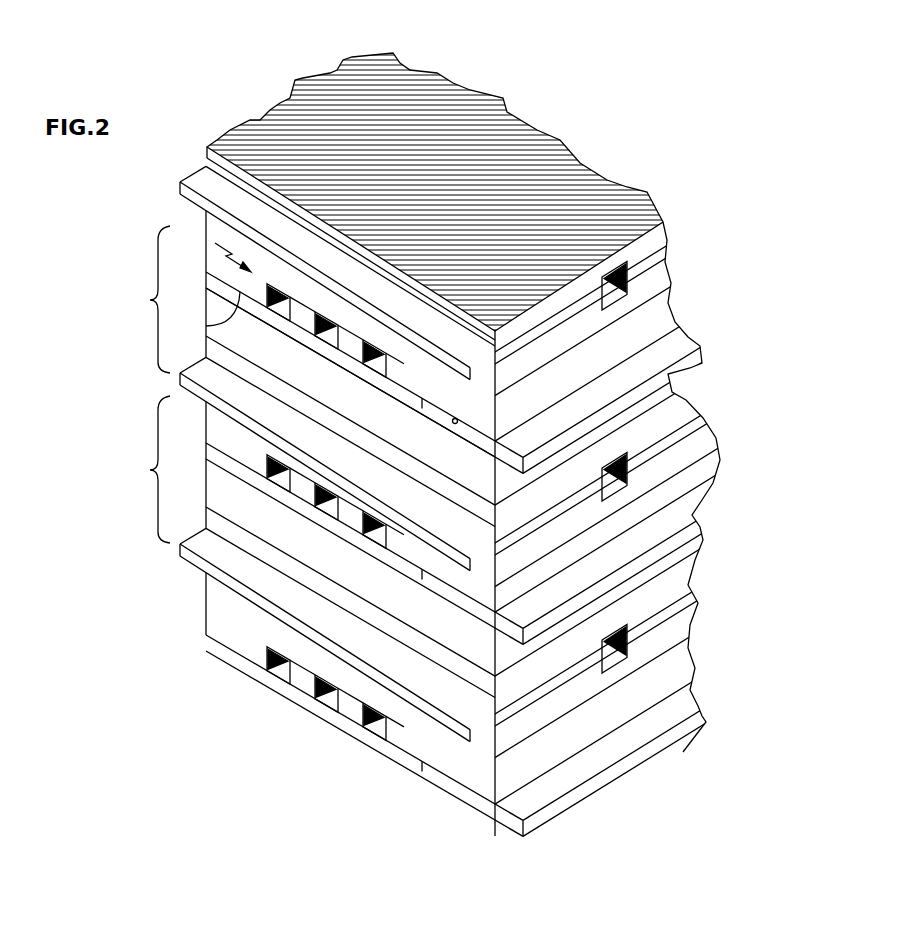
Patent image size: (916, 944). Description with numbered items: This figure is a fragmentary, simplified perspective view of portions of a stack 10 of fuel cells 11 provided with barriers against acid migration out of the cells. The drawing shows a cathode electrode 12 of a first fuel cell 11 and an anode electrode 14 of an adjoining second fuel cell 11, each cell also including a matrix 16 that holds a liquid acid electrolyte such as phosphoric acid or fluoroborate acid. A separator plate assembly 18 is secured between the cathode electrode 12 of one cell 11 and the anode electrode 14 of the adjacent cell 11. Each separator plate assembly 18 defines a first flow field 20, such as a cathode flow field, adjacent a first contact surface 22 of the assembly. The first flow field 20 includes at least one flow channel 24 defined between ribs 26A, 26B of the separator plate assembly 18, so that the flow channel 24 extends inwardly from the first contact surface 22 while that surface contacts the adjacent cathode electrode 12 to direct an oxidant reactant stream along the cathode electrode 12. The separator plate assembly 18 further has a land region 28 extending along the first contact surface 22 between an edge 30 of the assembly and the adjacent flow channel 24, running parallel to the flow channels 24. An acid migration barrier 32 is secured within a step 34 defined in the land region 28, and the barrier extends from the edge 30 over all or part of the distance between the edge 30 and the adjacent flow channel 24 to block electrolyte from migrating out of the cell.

The stack 10 is at (675, 162).
The fuel cell 11 is at (128, 384).
The cathode electrode 12 is at (500, 465).
The anode electrode 14 is at (640, 252).
The matrix 16 is at (212, 470).
The separator plate assembly 18 is at (652, 308).
The first flow field 20 is at (212, 238).
The first contact surface 22 is at (206, 326).
The flow channel 24 is at (382, 386).
The rib 26A is at (298, 328).
The rib 26B is at (352, 350).
The land region 28 is at (410, 403).
The edge 30 is at (540, 368).
The acid migration barrier 32 is at (180, 373).
The step 34 is at (456, 418).